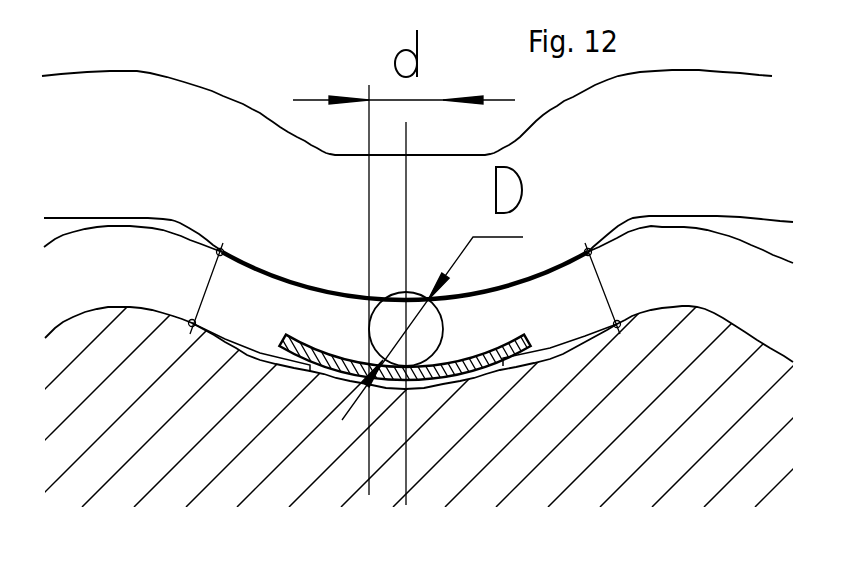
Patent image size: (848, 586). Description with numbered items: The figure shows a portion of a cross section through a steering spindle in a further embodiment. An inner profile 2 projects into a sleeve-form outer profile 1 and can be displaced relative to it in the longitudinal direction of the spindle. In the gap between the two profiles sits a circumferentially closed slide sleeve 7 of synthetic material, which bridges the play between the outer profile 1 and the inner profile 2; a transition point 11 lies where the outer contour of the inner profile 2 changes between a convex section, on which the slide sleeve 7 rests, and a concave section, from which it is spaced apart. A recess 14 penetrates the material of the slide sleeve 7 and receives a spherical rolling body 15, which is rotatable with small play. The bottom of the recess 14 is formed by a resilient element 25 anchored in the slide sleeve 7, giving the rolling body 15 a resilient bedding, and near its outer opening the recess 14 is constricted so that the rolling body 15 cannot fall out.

The outer profile 1 is at (158, 132).
The inner profile 2 is at (248, 425).
The slide sleeve 7 is at (131, 253).
The transition point 11 is at (192, 326).
The recess 14 is at (443, 85).
The rolling body 15 is at (382, 327).
The resilient element 25 is at (450, 370).